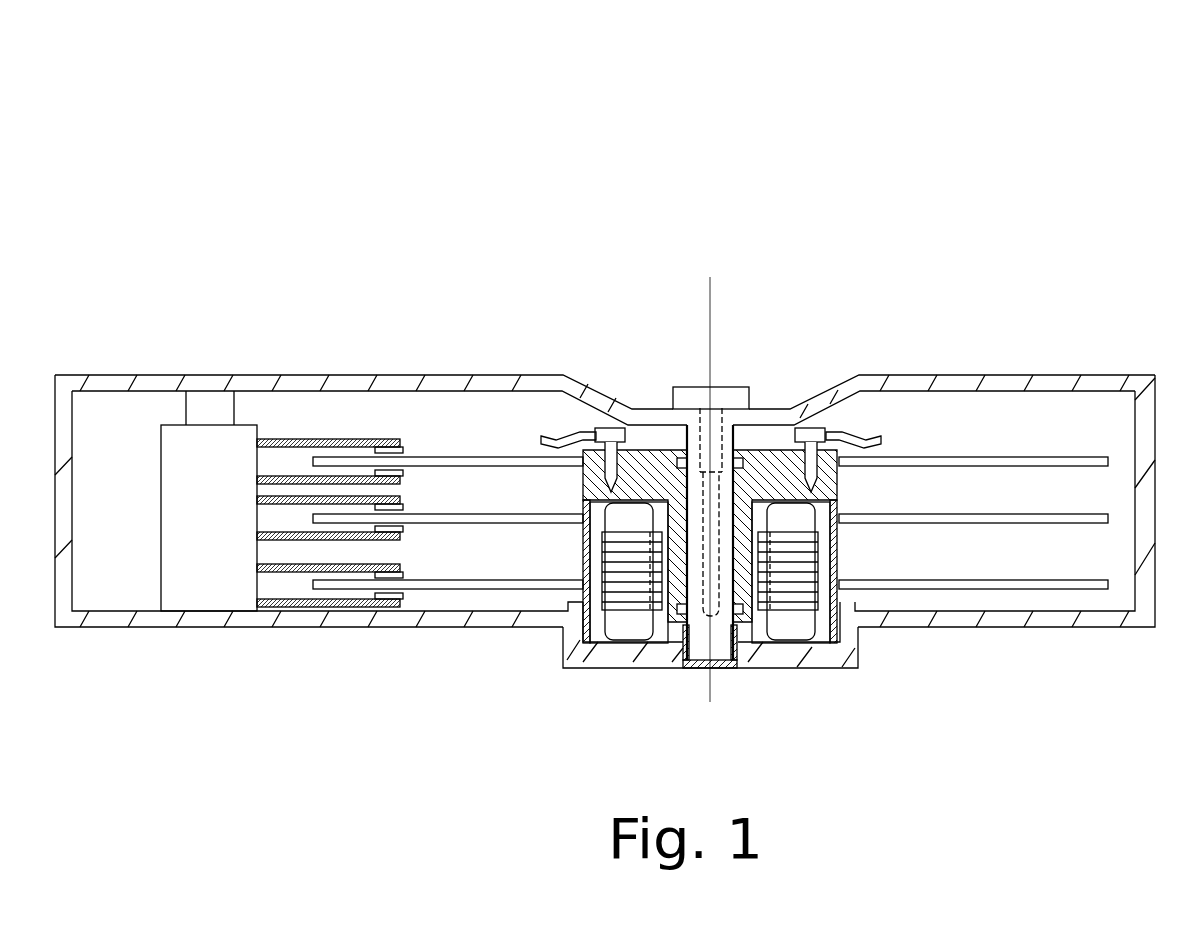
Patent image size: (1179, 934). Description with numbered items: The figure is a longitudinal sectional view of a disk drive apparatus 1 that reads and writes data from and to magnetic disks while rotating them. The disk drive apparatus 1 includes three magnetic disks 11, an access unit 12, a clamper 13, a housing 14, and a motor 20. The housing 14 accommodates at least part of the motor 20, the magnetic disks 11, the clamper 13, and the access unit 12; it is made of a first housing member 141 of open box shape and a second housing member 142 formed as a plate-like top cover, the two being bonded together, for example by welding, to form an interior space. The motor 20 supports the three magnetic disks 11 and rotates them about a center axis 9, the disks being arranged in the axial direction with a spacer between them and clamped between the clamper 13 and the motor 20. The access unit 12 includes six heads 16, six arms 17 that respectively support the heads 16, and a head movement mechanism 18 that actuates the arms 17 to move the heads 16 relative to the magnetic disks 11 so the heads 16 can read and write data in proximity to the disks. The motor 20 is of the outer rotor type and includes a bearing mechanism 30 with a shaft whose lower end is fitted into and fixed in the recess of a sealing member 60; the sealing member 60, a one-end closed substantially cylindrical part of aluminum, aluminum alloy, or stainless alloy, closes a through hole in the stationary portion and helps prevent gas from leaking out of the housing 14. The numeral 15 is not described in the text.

The disk drive apparatus 1 is at (720, 148).
The center axis 9 is at (710, 306).
The magnetic disks 11 is at (1008, 460).
The access unit 12 is at (307, 274).
The clamper 13 is at (545, 438).
The housing 14 is at (1058, 640).
The bobbin wall 15 is at (850, 557).
The heads 16 is at (402, 443).
The arms 17 is at (308, 439).
The head movement mechanism 18 is at (222, 448).
The motor 20 is at (753, 445).
The bearing mechanism 30 is at (690, 430).
The sealing member 60 is at (695, 665).
The first housing member 141 is at (1145, 607).
The second housing member 142 is at (1053, 380).